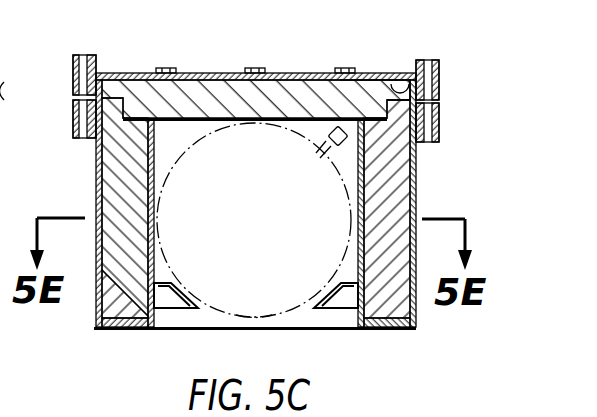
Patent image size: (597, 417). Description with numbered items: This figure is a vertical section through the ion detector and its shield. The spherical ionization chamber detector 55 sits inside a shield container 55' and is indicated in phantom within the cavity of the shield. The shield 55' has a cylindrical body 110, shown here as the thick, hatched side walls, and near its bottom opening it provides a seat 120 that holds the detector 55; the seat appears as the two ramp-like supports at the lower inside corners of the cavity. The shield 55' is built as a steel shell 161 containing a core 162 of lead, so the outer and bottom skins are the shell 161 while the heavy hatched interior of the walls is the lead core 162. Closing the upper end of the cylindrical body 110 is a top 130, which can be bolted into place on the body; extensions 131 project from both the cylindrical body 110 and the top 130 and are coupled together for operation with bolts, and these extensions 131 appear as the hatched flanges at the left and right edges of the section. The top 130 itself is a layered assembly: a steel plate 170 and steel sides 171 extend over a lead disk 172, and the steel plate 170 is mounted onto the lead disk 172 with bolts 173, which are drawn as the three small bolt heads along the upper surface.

The detector 55 is at (254, 220).
The shield container 55' is at (207, 208).
The cylindrical body 110 is at (88, 165).
The seat 120 is at (166, 302).
The top 130 is at (206, 74).
The extensions 131 is at (73, 116).
The steel shell 161 is at (124, 326).
The core 162 is at (108, 303).
The steel plate 170 is at (368, 74).
The steel sides 171 is at (393, 76).
The lead disk 172 is at (281, 84).
The bolts 173 is at (254, 67).